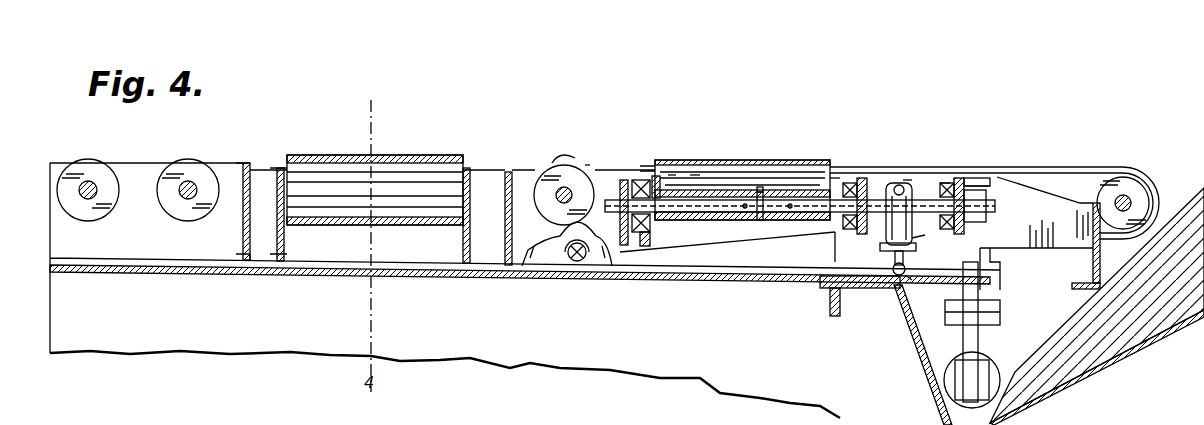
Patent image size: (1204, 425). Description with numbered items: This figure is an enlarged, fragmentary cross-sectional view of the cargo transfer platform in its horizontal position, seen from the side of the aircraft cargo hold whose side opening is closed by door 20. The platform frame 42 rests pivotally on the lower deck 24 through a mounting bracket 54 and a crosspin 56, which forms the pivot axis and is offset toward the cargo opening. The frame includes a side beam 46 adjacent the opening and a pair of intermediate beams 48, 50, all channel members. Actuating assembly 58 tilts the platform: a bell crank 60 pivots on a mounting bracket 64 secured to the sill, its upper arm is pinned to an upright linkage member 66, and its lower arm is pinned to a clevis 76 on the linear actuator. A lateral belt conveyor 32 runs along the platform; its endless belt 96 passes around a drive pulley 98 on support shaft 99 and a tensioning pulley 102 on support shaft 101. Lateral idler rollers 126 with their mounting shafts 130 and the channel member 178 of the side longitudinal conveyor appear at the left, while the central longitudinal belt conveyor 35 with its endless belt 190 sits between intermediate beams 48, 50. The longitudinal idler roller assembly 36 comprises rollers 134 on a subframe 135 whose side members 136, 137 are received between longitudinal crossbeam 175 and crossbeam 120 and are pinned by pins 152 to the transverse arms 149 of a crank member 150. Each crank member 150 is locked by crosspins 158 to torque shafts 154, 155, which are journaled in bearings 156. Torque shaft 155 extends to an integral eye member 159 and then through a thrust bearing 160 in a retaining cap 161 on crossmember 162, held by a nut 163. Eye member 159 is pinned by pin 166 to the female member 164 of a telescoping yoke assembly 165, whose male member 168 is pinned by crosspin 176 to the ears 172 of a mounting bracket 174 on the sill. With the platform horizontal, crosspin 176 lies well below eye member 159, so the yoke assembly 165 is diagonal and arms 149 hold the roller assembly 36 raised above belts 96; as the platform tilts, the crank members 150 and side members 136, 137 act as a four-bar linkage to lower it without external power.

The door 20 is at (1130, 330).
The lower deck 24 is at (350, 275).
The lateral belt conveyor 32 is at (1082, 86).
The longitudinal belt conveyor 35 is at (380, 125).
The longitudinal idler roller assembly 36 is at (786, 125).
The frame 42 is at (530, 146).
The side beam 46 is at (1092, 262).
The intermediate beam 48 is at (497, 276).
The intermediate beam 50 is at (242, 228).
The mounting bracket 54 is at (545, 276).
The crosspin 56 is at (570, 276).
The actuating assembly 58 is at (1045, 400).
The bell crank 60 is at (945, 396).
The mounting bracket 64 is at (912, 350).
The linkage member 66 is at (1003, 276).
The clevis 76 is at (995, 365).
The endless belt 96 is at (622, 168).
The drive pulley 98 is at (555, 165).
The support shaft 99 is at (590, 165).
The support shaft 101 is at (1124, 195).
The tensioning pulley 102 is at (1152, 208).
The crossbeam 120 is at (632, 276).
The lateral idler roller 126 is at (188, 160).
The roller shaft 130 is at (185, 190).
The roller 134 is at (745, 162).
The subframe 135 is at (682, 278).
The side member 136 is at (665, 160).
The side member 137 is at (845, 182).
The transverse arm 149 is at (670, 174).
The crank member 150 is at (728, 270).
The pin 152 is at (695, 174).
The torque shaft 154 is at (612, 276).
The torque shaft 155 is at (775, 268).
The bearing 156 is at (642, 176).
The crosspin 158 is at (728, 225).
The eye member 159 is at (886, 182).
The thrust bearing 160 is at (1000, 185).
The retaining cap 161 is at (990, 186).
The crossmember 162 is at (1020, 186).
The nut 163 is at (1040, 190).
The female member 164 is at (945, 182).
The telescoping yoke assembly 165 is at (968, 182).
The pin 166 is at (905, 180).
The male member 168 is at (915, 243).
The ear 172 is at (895, 258).
The mounting bracket 174 is at (905, 300).
The longitudinal crossbeam 175 is at (850, 170).
The crosspin 176 is at (906, 262).
The channel member 178 is at (288, 250).
The endless belt 190 is at (437, 156).